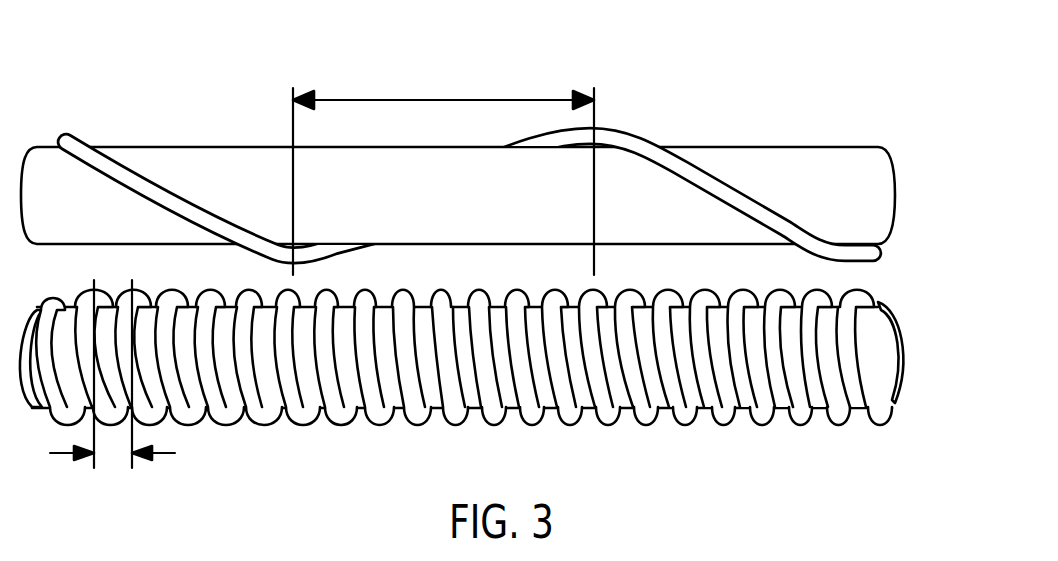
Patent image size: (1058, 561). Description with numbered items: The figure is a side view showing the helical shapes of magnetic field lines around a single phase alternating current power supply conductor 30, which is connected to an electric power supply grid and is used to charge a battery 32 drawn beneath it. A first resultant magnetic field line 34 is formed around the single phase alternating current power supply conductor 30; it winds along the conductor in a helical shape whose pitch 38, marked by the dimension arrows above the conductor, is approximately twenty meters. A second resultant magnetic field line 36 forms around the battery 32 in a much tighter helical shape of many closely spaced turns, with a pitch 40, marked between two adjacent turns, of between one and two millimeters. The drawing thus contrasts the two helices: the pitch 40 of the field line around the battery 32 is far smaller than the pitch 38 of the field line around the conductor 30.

The single phase alternating current power supply conductor 30 is at (877, 178).
The battery 32 is at (899, 323).
The first resultant magnetic field line 34 is at (624, 131).
The second resultant magnetic field line 36 is at (645, 426).
The pitch 38 is at (443, 172).
The pitch 40 is at (128, 374).